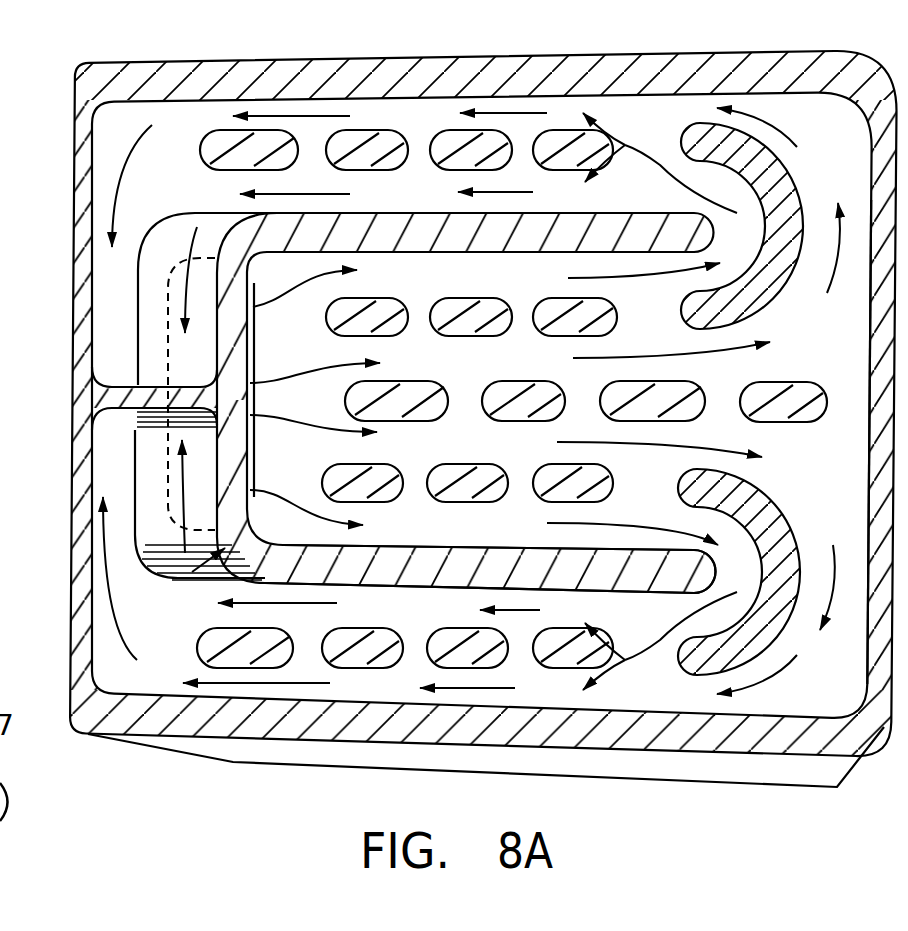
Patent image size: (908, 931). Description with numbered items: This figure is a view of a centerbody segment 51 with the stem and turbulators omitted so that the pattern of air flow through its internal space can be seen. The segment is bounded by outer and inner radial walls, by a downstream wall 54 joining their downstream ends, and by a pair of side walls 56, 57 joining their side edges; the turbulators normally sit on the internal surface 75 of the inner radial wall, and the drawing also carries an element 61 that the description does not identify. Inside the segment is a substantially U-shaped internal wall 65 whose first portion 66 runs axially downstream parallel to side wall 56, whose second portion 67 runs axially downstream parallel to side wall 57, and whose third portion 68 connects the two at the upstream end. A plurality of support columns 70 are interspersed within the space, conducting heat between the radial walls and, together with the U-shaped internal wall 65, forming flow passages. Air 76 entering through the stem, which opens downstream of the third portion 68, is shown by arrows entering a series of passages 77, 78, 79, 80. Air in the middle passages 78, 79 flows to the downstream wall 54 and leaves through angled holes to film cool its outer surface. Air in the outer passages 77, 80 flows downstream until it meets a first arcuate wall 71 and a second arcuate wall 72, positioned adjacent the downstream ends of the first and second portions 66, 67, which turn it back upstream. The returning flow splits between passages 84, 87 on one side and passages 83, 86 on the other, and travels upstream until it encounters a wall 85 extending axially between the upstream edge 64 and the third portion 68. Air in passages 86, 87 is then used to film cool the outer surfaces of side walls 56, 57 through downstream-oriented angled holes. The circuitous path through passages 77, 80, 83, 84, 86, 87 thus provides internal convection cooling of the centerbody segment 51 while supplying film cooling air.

The centerbody segment 51 is at (552, 50).
The side wall 57 is at (693, 62).
The side wall 56 is at (662, 740).
The front face of housing 61 is at (707, 772).
The downstream wall 54 is at (880, 328).
The upstream edge 64 is at (75, 165).
The internal surface 75 is at (841, 703).
The second portion 67 is at (598, 213).
The first portion 66 is at (605, 592).
The second arcuate wall 72 is at (792, 203).
The first arcuate wall 71 is at (780, 538).
The third portion 68 is at (228, 337).
The wall 85 is at (157, 428).
The U-shaped internal wall 65 is at (182, 577).
The air 76 is at (265, 307).
The support columns 70 is at (787, 410).
The passage 87 is at (437, 130).
The passage 84 is at (434, 205).
The passage 80 is at (484, 288).
The passage 79 is at (484, 373).
The passage 78 is at (479, 460).
The passage 77 is at (494, 540).
The passage 83 is at (447, 622).
The passage 86 is at (379, 699).